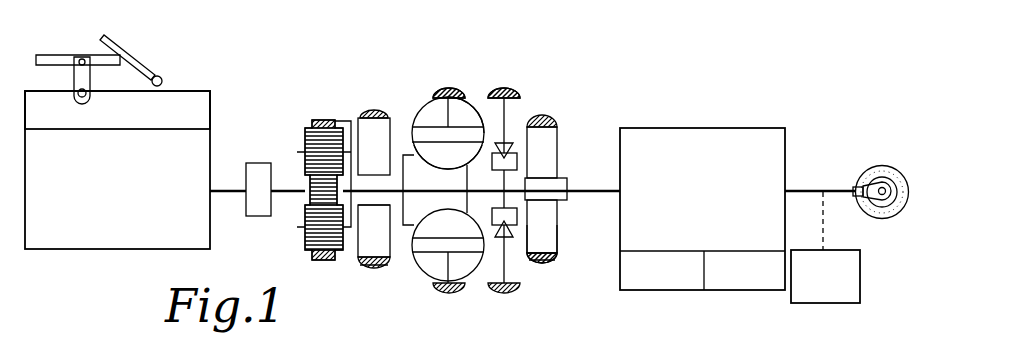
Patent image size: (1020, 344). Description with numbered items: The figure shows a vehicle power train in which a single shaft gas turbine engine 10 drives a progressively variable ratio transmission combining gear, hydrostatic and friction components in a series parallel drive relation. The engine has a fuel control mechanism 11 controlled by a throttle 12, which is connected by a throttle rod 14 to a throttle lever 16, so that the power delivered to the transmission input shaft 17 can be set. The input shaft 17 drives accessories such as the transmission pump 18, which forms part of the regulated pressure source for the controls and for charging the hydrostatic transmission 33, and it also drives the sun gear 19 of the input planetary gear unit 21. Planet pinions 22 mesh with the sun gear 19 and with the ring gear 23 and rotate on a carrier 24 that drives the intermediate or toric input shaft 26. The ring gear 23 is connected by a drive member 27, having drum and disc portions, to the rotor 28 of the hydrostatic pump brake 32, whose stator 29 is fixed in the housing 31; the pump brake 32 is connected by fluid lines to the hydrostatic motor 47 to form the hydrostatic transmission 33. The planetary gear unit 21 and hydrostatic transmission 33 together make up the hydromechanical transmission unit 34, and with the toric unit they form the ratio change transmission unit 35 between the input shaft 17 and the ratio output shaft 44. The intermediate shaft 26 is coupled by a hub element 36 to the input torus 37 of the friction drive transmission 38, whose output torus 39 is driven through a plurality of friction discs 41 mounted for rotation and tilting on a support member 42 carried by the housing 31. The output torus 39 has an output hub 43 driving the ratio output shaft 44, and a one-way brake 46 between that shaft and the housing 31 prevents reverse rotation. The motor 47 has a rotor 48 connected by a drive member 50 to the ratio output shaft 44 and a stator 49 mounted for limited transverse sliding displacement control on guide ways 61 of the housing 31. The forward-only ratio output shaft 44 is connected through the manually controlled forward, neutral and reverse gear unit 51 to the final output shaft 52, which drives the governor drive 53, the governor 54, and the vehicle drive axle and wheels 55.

The single shaft gas turbine engine 10 is at (128, 238).
The fuel control mechanism 11 is at (200, 103).
The throttle 12 is at (117, 60).
The throttle rod 14 is at (60, 57).
The throttle lever 16 is at (73, 73).
The transmission input shaft 17 is at (247, 200).
The transmission pump 18 is at (259, 216).
The sun gear 19 is at (310, 197).
The input planetary gear unit 21 is at (298, 113).
The planet pinions 22 is at (306, 148).
The ring gear 23 is at (315, 120).
The carrier 24 is at (352, 168).
The intermediate or toric input shaft 26 is at (382, 198).
The drive member 27 is at (352, 120).
The rotor 28 is at (382, 178).
The stator 29 is at (367, 242).
The housing 31 is at (457, 95).
The hydrostatic pump brake 32 is at (373, 104).
The hydrostatic transmission 33 is at (379, 276).
The hydromechanical transmission unit 34 is at (300, 243).
The ratio change transmission unit 35 is at (513, 76).
The hub element 36 is at (403, 224).
The input torus 37 is at (416, 114).
The progressively variable ratio friction drive transmission 38 is at (450, 80).
The output torus 39 is at (483, 122).
The friction discs 41 is at (433, 143).
The support member 42 is at (430, 110).
The output hub 43 is at (448, 242).
The ratio output shaft 44 is at (584, 190).
The one-way brake 46 is at (505, 142).
The hydrostatic motor 47 is at (563, 133).
The rotor 48 is at (544, 203).
The stator 49 is at (546, 233).
The drive member 50 is at (563, 178).
The forward, neutral, and reverse gear unit 51 is at (723, 134).
The final output shaft 52 is at (803, 190).
The governor drive 53 is at (825, 210).
The governor 54 is at (833, 295).
The vehicle drive axle and wheels 55 is at (882, 170).
The guide ways 61 is at (558, 263).